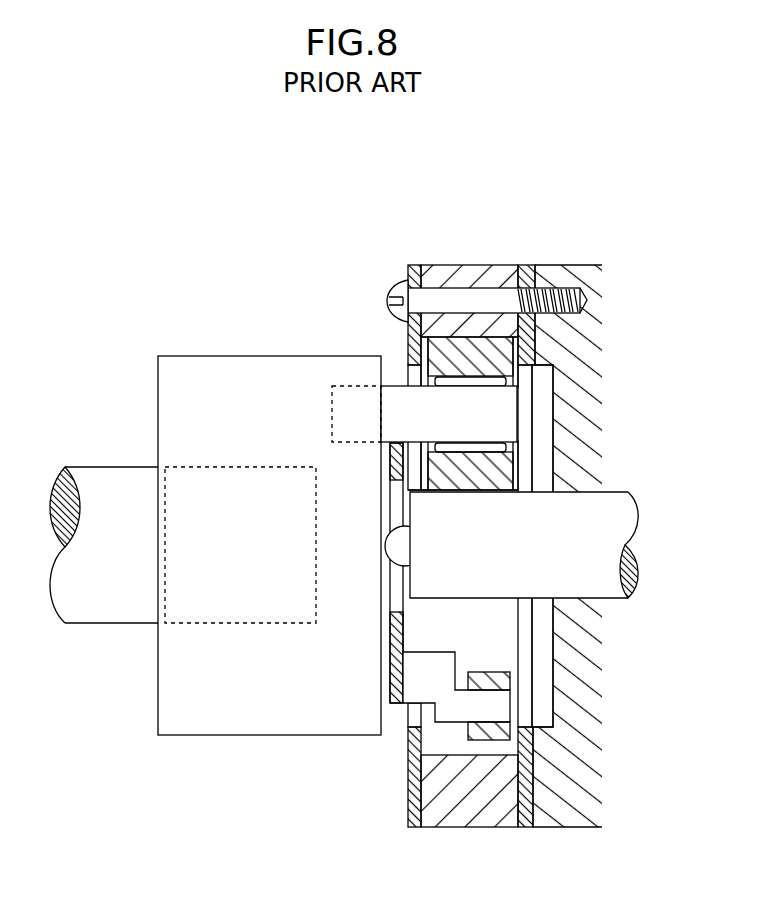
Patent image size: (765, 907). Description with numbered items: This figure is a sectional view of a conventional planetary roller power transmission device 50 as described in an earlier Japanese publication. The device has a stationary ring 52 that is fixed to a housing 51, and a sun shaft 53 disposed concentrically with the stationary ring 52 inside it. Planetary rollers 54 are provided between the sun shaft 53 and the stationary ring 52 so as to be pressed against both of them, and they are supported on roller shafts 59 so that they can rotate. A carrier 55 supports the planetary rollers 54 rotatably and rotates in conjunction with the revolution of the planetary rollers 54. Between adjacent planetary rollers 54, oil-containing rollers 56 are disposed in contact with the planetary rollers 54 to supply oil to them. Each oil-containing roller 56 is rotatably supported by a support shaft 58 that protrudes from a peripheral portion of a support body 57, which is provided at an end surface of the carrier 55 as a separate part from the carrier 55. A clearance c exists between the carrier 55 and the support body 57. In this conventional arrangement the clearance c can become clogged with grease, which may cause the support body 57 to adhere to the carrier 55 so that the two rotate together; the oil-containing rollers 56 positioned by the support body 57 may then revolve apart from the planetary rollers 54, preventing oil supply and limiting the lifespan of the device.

The planetary roller power transmission device 50 is at (483, 550).
The housing 51 is at (560, 262).
The stationary ring 52 is at (460, 264).
The sun shaft 53 is at (606, 505).
The planetary rollers 54 is at (483, 346).
The carrier 55 is at (208, 370).
The oil-containing rollers 56 is at (490, 672).
The support body 57 is at (418, 635).
The support shafts 58 is at (460, 707).
The roller shafts 59 is at (493, 412).
The clearance c is at (387, 712).